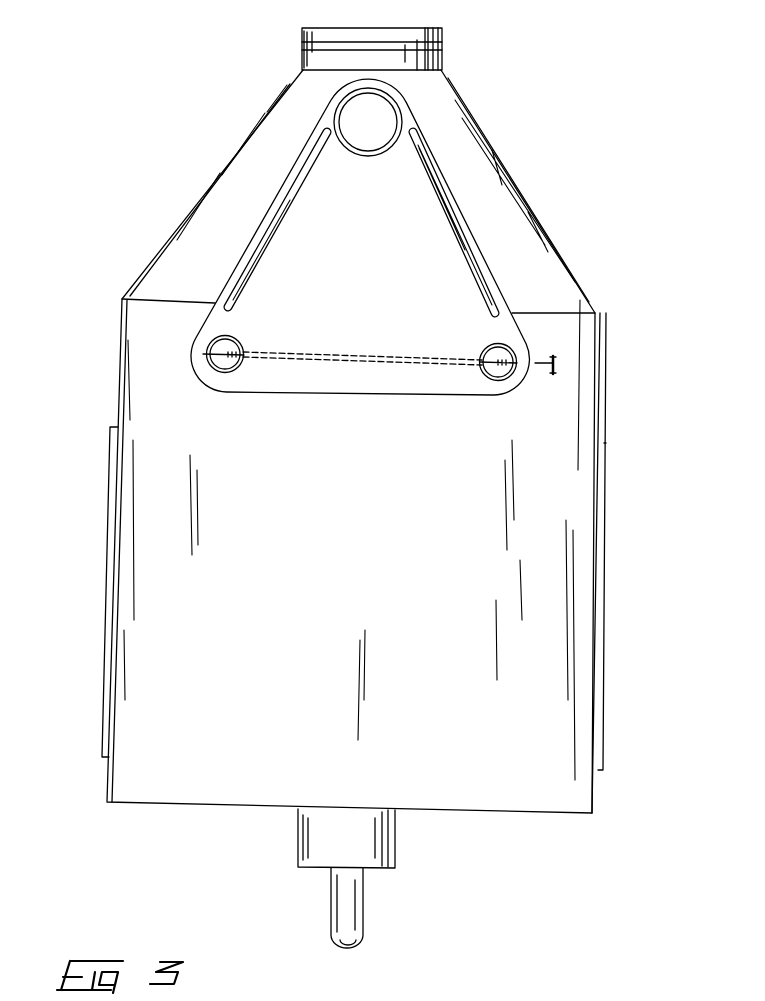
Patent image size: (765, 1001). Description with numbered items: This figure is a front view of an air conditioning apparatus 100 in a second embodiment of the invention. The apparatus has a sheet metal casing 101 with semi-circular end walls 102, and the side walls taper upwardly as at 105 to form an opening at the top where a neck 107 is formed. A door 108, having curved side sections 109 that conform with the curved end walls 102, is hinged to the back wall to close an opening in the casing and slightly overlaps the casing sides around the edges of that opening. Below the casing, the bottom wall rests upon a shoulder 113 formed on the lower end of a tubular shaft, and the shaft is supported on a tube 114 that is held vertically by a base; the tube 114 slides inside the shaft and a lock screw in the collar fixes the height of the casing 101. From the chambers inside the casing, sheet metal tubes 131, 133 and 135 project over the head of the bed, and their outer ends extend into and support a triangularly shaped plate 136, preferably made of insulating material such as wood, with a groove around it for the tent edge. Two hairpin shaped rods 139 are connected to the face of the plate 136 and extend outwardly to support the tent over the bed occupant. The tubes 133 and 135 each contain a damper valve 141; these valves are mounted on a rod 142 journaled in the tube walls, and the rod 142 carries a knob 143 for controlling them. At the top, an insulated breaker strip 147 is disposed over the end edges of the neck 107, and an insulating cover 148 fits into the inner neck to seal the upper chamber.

The air conditioning apparatus 100 is at (528, 868).
The casing 101 is at (360, 585).
The semi-circular end walls 102 is at (118, 366).
The tapered side walls 105 is at (527, 232).
The neck 107 is at (356, 42).
The door 108 is at (622, 549).
The curved side sections 109 is at (606, 635).
The shoulder 113 is at (313, 841).
The tube 114 is at (352, 913).
The sheet metal tube 131 is at (363, 157).
The sheet metal tube 133 is at (243, 362).
The sheet metal tube 135 is at (487, 367).
The triangularly shaped plate 136 is at (353, 394).
The hairpin shaped rods 139 is at (265, 245).
The damper valve 141 is at (247, 353).
The rod 142 is at (357, 357).
The knob 143 is at (555, 362).
The insulated breaker strip 147 is at (303, 45).
The insulating cover 148 is at (438, 33).